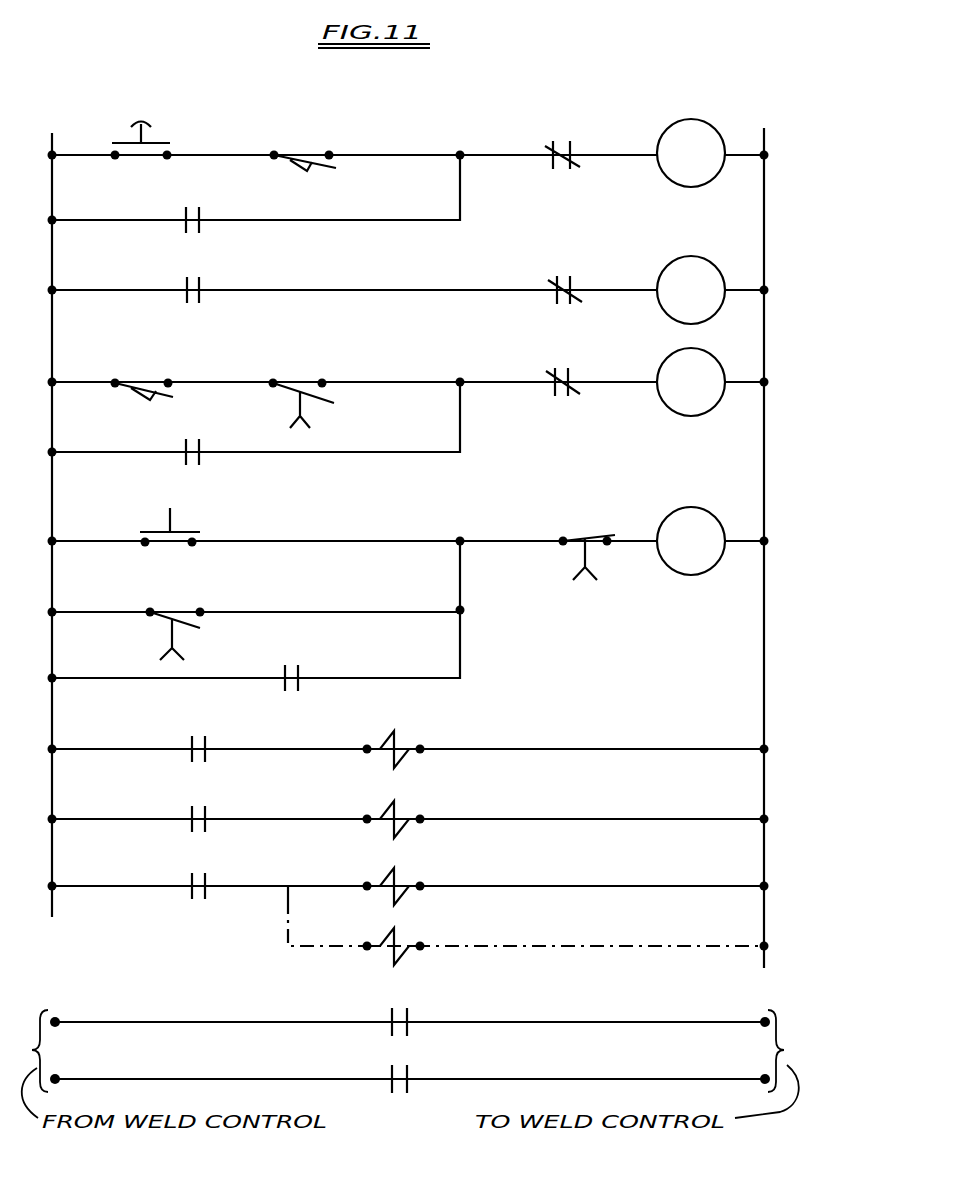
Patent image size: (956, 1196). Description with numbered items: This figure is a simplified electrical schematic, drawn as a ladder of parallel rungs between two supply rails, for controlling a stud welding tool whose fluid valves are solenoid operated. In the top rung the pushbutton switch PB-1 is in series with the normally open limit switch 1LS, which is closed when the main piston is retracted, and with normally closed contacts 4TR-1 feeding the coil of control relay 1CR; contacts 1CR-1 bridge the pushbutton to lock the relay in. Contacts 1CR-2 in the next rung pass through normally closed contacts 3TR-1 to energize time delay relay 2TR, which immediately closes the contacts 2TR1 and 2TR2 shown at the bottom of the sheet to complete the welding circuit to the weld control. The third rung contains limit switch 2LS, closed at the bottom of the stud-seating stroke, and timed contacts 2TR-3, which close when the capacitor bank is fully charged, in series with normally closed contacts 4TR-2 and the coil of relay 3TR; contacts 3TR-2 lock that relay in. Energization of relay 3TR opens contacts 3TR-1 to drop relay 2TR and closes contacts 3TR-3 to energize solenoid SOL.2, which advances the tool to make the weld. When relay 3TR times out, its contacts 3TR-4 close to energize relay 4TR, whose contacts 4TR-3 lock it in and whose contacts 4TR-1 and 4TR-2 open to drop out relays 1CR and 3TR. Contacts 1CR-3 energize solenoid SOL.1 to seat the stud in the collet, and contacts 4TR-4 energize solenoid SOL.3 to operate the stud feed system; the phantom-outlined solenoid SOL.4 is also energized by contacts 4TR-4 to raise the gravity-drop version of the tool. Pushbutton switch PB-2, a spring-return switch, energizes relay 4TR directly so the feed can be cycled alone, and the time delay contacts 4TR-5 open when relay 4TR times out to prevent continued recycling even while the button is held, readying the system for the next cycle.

The pushbutton switch PB-1 is at (141, 126).
The limit switch 1LS is at (303, 144).
The relay contacts 4TR-1 is at (550, 139).
The control relay 1CR is at (691, 153).
The relay contacts 1CR-1 is at (187, 207).
The relay contacts 1CR-2 is at (189, 277).
The relay contacts 3TR-1 is at (556, 275).
The time delay relay 2TR is at (691, 290).
The limit switch 2LS is at (142, 372).
The time delay relay contacts 2TR-3 is at (296, 386).
The relay contacts 4TR-2 is at (550, 368).
The relay 3TR is at (691, 382).
The relay contacts 3TR-2 is at (193, 438).
The pushbutton switch PB-2 is at (170, 515).
The time delay contacts 4TR-5 is at (579, 542).
The relay 4TR is at (691, 541).
The relay contacts 3TR-4 is at (174, 617).
The relay contacts 4TR-3 is at (290, 665).
The relay contacts 1CR-3 is at (189, 735).
The solenoid SOL.1 is at (417, 741).
The relay contacts 3TR-3 is at (193, 807).
The solenoid SOL.2 is at (416, 810).
The relay contacts 4TR-4 is at (188, 873).
The solenoid SOL.3 is at (416, 876).
The solenoid SOL.4 is at (416, 937).
The relay contacts 2TR1 is at (387, 1010).
The relay contacts 2TR2 is at (387, 1068).